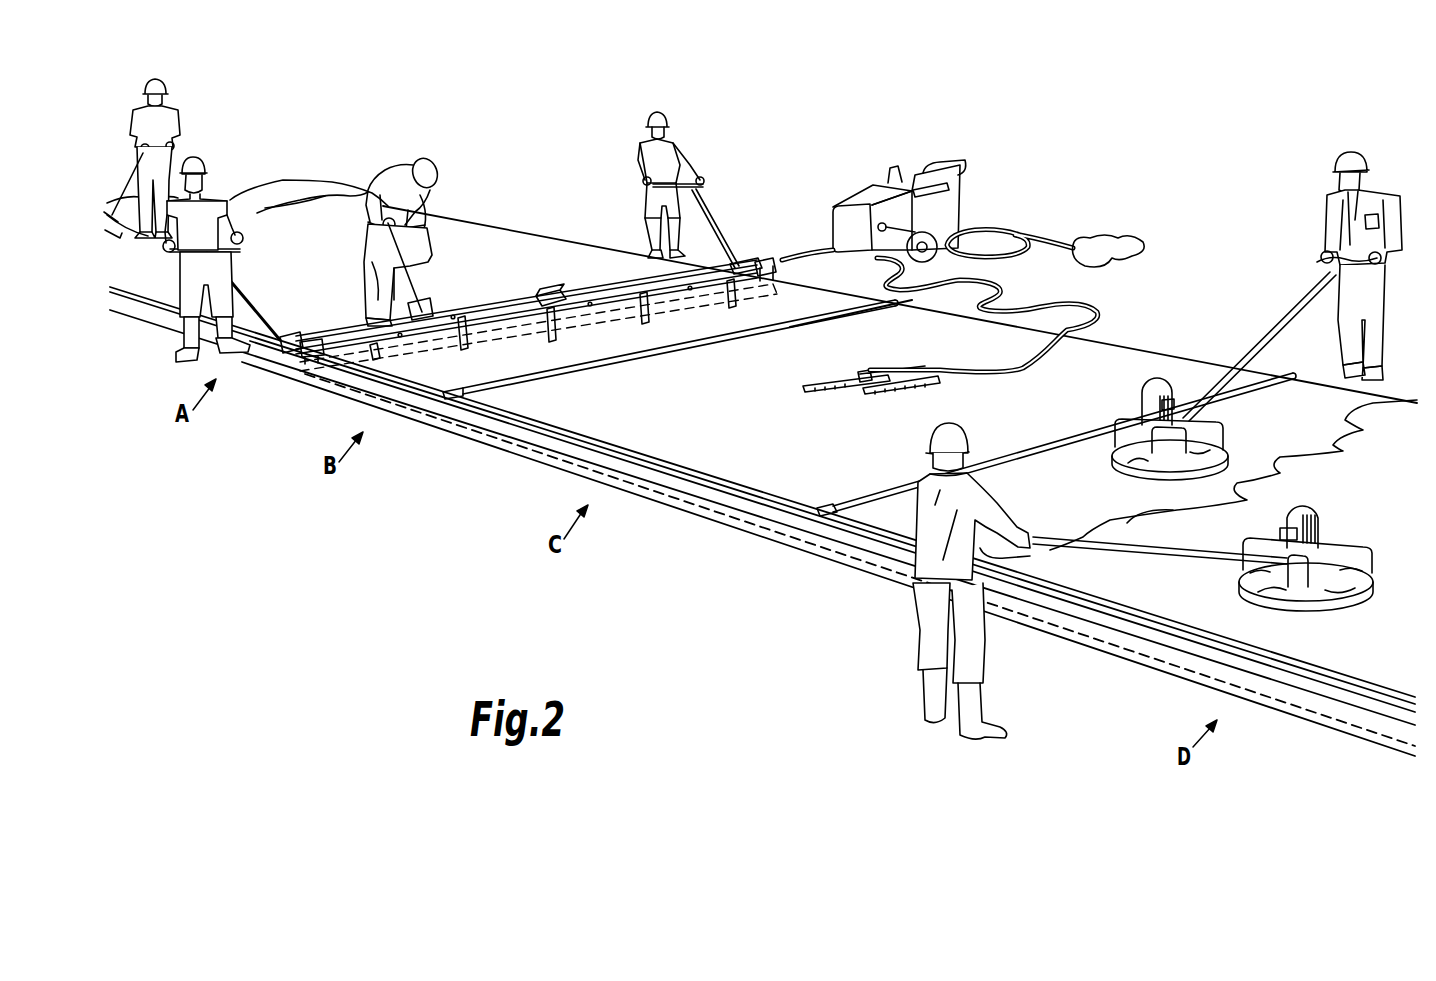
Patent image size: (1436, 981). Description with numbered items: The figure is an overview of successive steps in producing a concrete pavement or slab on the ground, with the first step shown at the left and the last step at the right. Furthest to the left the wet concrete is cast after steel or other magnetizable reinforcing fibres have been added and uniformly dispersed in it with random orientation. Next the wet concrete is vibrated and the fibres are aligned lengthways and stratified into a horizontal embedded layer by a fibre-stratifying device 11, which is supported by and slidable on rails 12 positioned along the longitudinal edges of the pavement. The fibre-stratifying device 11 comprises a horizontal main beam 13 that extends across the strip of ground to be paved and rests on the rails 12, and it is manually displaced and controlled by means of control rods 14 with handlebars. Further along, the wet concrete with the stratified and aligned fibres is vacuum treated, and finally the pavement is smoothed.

The fibre-stratifying device 11 is at (768, 258).
The rails 12 is at (765, 508).
The horizontal main beam 13 is at (707, 260).
The control rods 14 is at (180, 258).